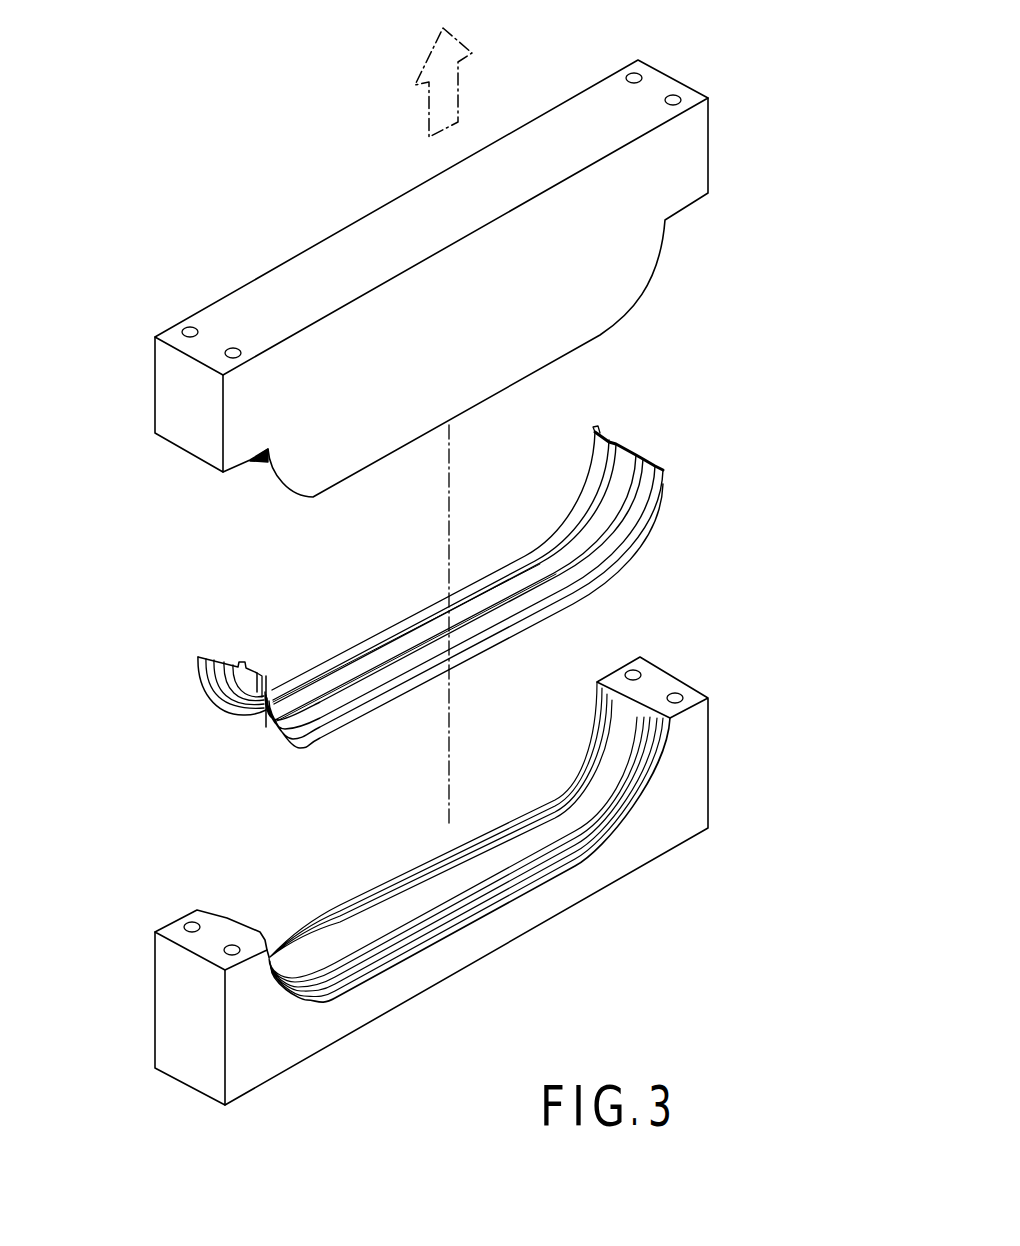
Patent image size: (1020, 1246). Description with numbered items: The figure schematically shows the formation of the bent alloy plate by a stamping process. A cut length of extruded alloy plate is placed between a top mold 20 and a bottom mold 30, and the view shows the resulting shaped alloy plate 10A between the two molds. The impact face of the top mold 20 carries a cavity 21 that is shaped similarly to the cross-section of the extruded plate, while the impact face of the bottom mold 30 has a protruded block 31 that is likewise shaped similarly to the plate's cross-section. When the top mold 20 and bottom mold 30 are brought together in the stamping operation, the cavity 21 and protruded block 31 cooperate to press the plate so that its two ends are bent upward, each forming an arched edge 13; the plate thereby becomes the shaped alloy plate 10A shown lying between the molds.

The top mold 20 is at (336, 262).
The cavity 21 is at (263, 460).
The shaped alloy plate 10A is at (360, 642).
The arched edge 13 is at (658, 533).
The bottom mold 30 is at (520, 915).
The protruded block 31 is at (343, 913).